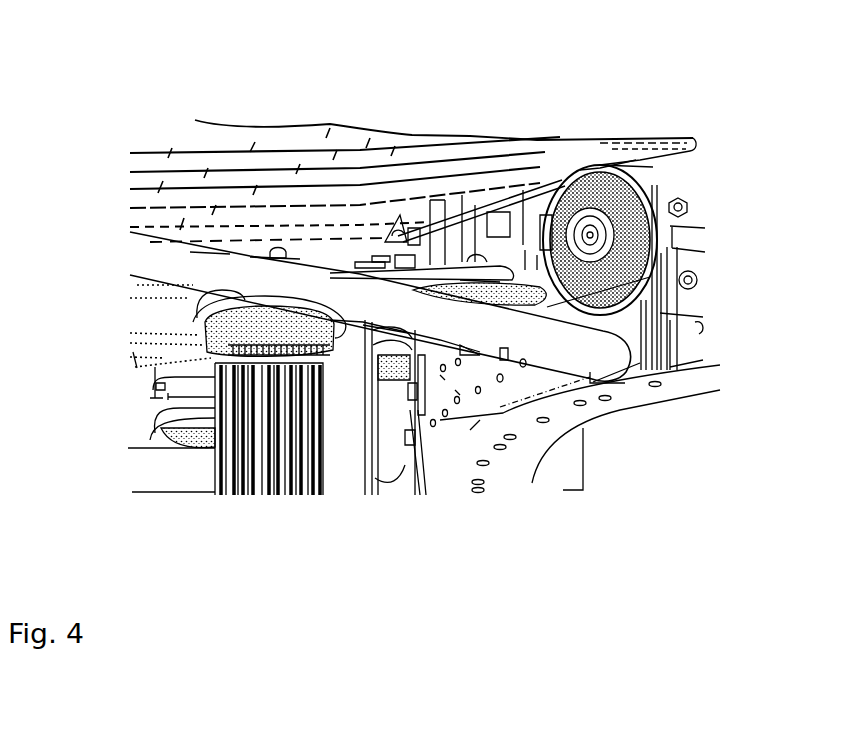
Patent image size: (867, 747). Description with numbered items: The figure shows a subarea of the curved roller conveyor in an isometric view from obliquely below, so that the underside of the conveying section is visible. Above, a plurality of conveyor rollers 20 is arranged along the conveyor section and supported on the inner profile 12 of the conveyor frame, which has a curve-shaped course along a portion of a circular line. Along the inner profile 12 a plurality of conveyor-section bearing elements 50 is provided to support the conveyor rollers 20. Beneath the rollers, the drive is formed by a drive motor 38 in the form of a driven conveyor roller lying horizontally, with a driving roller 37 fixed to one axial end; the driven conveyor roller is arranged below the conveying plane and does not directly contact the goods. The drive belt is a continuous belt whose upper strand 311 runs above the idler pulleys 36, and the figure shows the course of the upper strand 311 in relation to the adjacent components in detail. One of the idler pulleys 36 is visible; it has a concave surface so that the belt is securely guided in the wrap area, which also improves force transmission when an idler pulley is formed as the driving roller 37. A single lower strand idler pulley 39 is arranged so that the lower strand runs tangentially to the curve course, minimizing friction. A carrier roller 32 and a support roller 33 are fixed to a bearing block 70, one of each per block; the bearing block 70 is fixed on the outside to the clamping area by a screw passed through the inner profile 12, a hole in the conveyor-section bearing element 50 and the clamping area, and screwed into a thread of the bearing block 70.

The inner profile 12 is at (568, 422).
The conveyor rollers 20 is at (445, 233).
The carrier roller 32 is at (403, 234).
The support roller 33 is at (405, 232).
The idler pulley 36 is at (560, 180).
The driving roller 37 is at (208, 330).
The drive motor 38 is at (235, 493).
The lower strand idler pulley 39 is at (160, 440).
The conveyor-section bearing element 50 is at (476, 212).
The bearing block 70 is at (432, 233).
The upper strand 311 is at (476, 233).